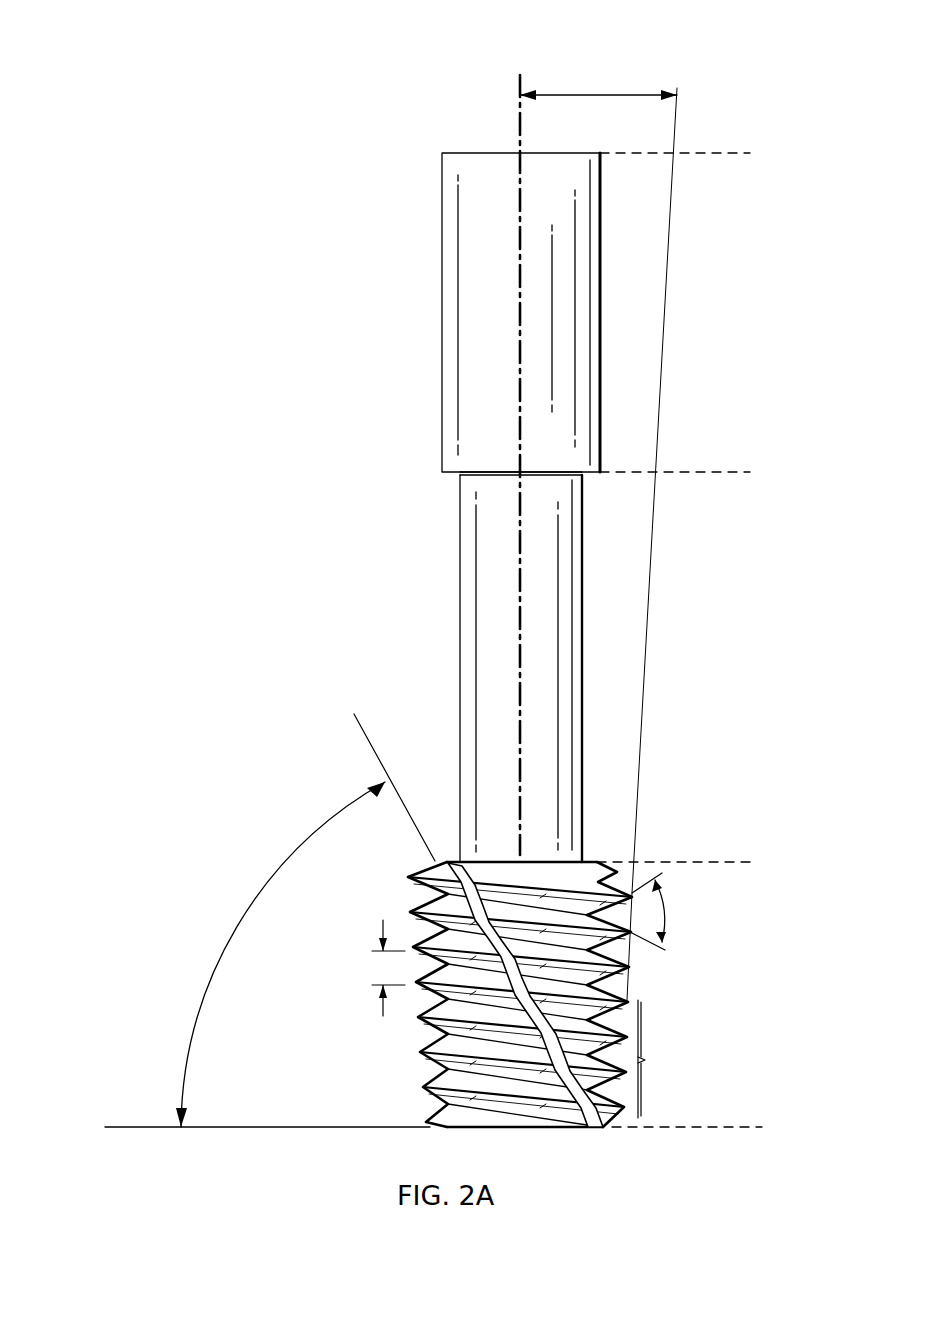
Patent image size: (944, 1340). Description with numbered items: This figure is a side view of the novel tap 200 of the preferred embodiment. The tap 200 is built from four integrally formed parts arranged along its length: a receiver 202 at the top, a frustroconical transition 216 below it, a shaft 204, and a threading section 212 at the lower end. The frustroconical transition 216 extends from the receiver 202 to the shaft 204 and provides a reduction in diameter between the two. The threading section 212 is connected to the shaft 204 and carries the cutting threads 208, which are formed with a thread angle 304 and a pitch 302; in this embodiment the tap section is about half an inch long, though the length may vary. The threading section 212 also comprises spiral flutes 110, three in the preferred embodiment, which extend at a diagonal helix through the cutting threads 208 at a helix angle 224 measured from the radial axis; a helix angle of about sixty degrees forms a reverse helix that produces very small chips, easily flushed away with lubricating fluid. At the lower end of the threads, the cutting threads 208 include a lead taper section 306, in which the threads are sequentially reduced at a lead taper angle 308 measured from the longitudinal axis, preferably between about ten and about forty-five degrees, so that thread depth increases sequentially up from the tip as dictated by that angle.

The tap 200 is at (352, 114).
The receiver 202 is at (750, 153).
The shaft 204 is at (750, 473).
The threading section 212 is at (616, 1029).
The frustroconical transition 216 is at (433, 487).
The cutting threads 208 is at (630, 967).
The spiral flutes 110 is at (600, 1130).
The helix angle 224 is at (240, 926).
The pitch 302 is at (384, 1010).
The thread angle 304 is at (663, 905).
The lead taper section 306 is at (672, 1059).
The lead taper angle 308 is at (597, 93).